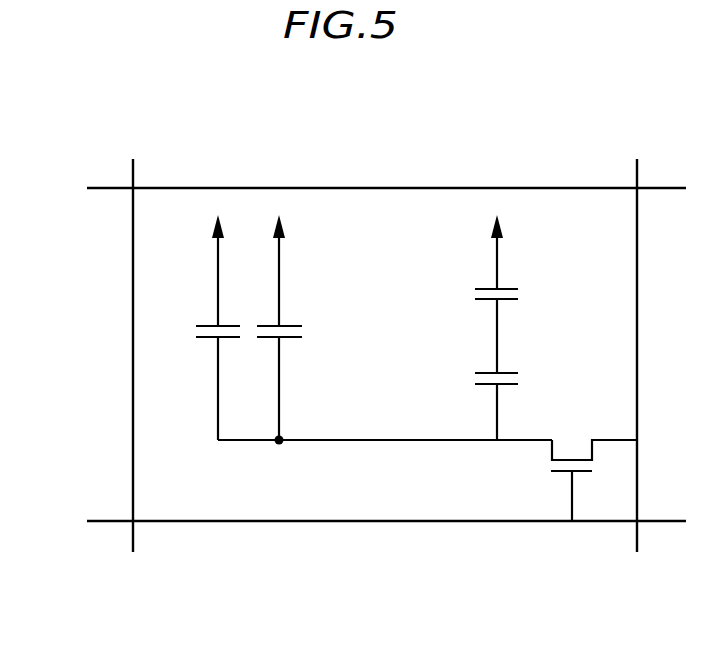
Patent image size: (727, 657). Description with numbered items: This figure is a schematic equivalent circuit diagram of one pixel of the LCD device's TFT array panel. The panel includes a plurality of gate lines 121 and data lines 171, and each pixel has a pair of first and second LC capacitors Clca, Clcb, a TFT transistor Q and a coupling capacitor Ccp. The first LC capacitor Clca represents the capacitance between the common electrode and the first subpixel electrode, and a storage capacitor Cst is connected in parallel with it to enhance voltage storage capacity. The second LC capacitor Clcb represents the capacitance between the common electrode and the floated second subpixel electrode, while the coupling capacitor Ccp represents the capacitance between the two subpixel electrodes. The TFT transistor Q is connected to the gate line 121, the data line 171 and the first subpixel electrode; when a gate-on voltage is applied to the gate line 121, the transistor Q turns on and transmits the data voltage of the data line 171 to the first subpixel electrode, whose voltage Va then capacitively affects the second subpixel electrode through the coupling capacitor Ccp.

The gate line 121 is at (303, 188).
The data line 171 is at (133, 259).
The first LC capacitor Clca is at (196, 327).
The storage capacitor Cst is at (295, 327).
The second LC capacitor Clcb is at (471, 294).
The coupling capacitor Ccp is at (477, 406).
The voltage of the first subpixel electrode Va is at (500, 462).
The TFT transistor Q is at (594, 470).